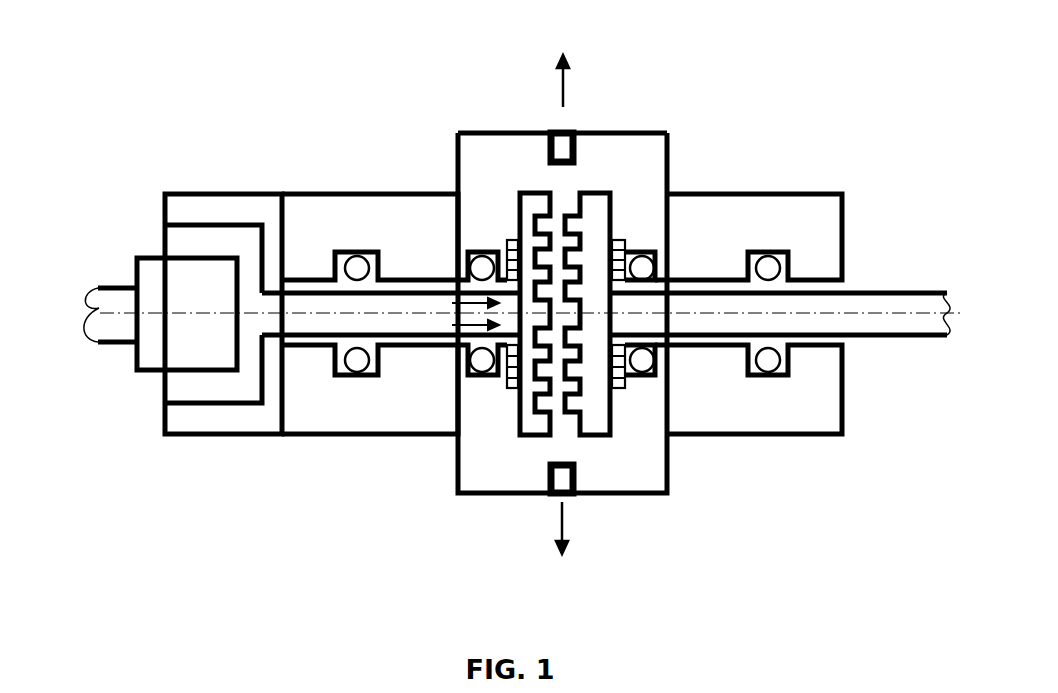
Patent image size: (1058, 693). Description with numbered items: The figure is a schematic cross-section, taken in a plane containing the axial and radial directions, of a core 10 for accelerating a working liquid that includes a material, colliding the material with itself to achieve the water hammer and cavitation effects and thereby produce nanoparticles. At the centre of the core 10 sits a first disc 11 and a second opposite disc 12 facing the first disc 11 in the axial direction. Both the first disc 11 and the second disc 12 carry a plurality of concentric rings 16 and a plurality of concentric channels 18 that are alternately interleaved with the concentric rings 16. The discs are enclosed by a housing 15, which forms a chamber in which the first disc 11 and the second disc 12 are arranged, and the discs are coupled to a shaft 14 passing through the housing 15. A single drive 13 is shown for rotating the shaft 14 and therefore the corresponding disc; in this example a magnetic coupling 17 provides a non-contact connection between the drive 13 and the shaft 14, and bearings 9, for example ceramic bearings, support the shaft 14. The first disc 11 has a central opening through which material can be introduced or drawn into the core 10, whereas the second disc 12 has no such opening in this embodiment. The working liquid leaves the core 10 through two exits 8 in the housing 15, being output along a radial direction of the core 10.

The exit 8 is at (567, 133).
The bearing 9 is at (790, 362).
The core 10 is at (628, 100).
The first disc 11 is at (517, 208).
The second disc 12 is at (612, 207).
The drive 13 is at (130, 353).
The shaft 14 is at (853, 291).
The housing 15 is at (533, 133).
The concentric rings 16 is at (565, 200).
The magnetic coupling 17 is at (217, 240).
The concentric channels 18 is at (507, 250).